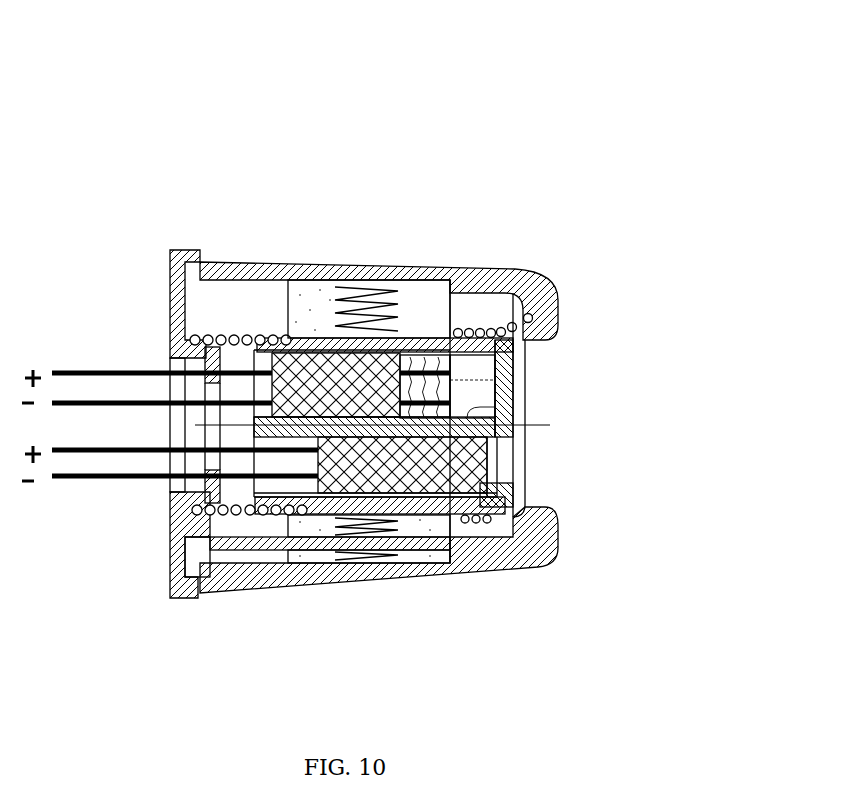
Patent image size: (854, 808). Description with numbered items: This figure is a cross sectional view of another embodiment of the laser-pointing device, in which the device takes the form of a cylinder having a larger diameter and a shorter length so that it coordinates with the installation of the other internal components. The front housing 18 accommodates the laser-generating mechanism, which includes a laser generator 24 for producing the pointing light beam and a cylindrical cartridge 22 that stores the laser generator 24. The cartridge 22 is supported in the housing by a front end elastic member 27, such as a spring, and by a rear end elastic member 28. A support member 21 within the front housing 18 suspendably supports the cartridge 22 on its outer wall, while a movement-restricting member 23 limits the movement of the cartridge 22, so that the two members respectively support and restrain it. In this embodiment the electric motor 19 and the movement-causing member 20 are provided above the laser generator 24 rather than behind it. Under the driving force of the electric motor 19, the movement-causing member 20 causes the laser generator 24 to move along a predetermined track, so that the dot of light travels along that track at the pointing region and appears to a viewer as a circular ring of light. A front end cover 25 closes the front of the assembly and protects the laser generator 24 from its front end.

The front housing 18 is at (410, 334).
The electric motor 19 is at (264, 262).
The movement-causing member 20 is at (562, 298).
The support member 21 is at (286, 293).
The cartridge 22 is at (516, 275).
The movement-restricting member 23 is at (420, 345).
The laser generator 24 is at (295, 578).
The front end cover 25 is at (595, 363).
The front end elastic member 27 is at (620, 405).
The rear end elastic member 28 is at (203, 574).